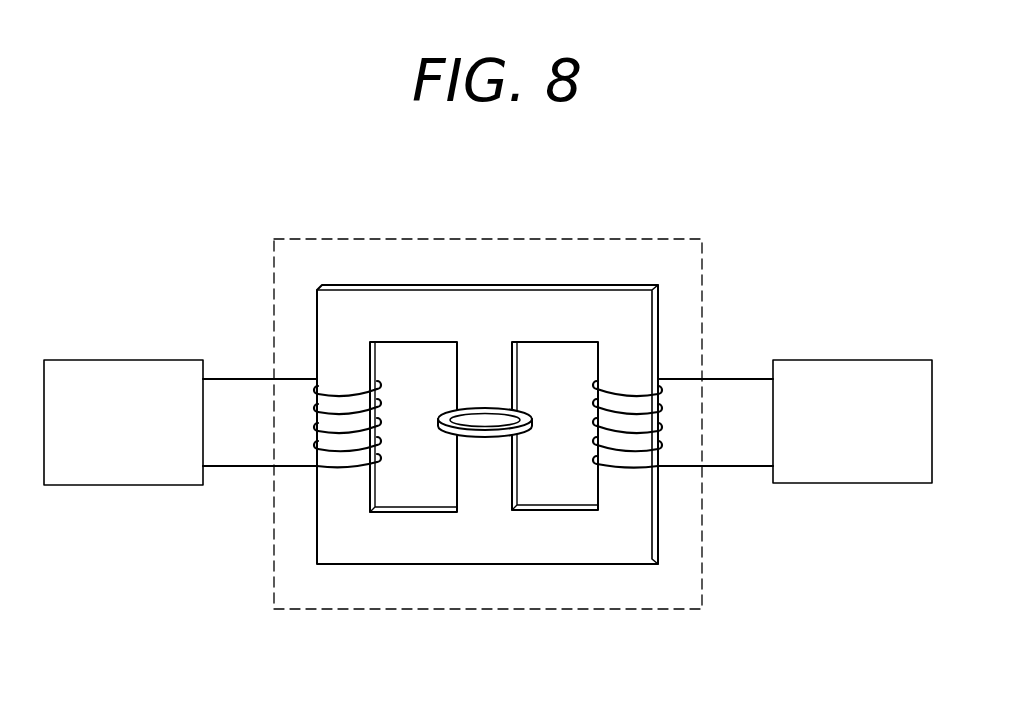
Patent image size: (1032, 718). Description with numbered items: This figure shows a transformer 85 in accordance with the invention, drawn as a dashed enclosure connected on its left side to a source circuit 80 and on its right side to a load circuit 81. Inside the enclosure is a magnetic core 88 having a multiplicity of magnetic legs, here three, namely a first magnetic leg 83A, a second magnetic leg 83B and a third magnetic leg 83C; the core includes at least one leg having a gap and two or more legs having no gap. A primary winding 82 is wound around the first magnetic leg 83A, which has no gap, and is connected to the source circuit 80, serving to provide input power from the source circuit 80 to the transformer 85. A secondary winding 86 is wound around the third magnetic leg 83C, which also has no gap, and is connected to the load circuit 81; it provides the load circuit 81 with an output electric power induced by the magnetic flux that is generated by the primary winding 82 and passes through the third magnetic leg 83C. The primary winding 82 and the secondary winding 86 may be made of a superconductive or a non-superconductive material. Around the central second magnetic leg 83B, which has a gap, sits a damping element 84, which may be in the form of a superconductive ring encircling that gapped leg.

The source circuit 80 is at (150, 360).
The load circuit 81 is at (876, 360).
The primary winding 82 is at (389, 382).
The first magnetic leg 83A is at (345, 497).
The second magnetic leg 83B is at (483, 490).
The third magnetic leg 83C is at (632, 485).
The damping element 84 is at (520, 412).
The transformer 85 is at (702, 276).
The secondary winding 86 is at (587, 382).
The magnetic core 88 is at (497, 433).